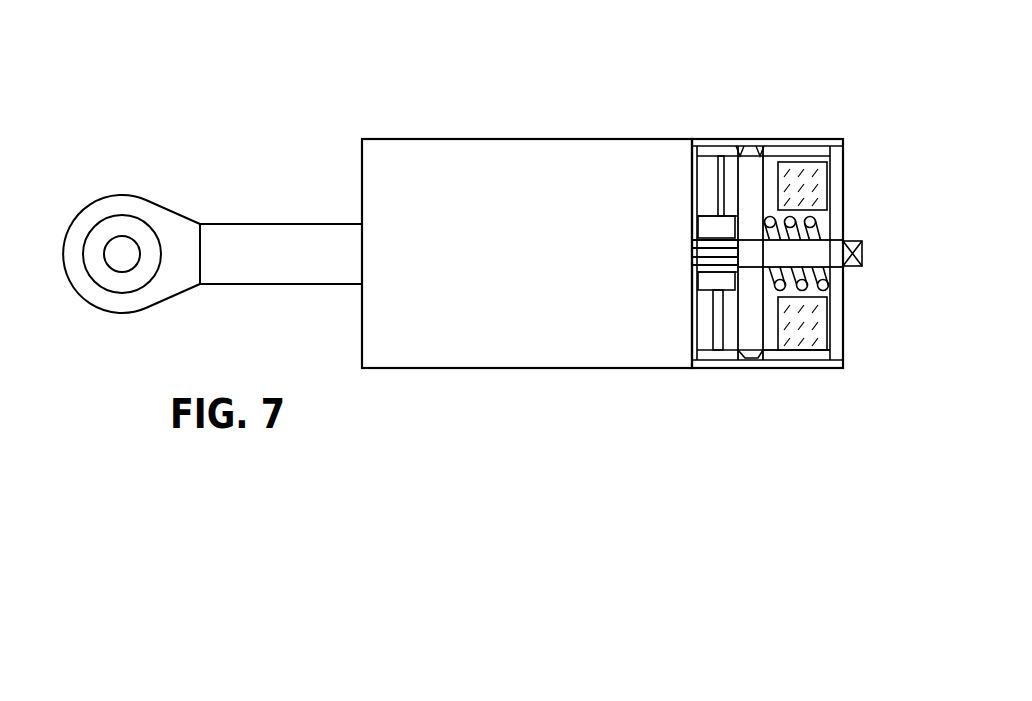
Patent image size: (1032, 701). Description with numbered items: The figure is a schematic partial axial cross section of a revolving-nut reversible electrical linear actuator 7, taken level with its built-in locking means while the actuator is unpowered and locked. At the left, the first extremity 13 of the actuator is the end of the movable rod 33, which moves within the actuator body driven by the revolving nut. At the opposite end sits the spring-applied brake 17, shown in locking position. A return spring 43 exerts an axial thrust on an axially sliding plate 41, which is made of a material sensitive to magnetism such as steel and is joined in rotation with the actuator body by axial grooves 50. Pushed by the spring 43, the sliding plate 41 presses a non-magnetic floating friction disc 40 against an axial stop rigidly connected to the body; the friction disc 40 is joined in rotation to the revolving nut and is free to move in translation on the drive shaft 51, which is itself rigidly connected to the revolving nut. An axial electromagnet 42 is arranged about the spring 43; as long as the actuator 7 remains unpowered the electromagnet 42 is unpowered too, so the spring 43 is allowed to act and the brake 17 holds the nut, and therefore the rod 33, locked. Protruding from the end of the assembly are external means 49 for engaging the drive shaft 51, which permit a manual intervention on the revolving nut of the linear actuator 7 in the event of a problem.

The linear actuator 7 is at (408, 392).
The first extremity 13 is at (91, 305).
The spring-applied brake 17 is at (740, 114).
The movable rod 33 is at (246, 227).
The floating friction disc 40 is at (720, 176).
The axially sliding plate 41 is at (757, 172).
The axial electromagnet 42 is at (815, 180).
The return spring 43 is at (828, 289).
The external means for engaging the drive shaft 49 is at (848, 240).
The axial grooves 50 is at (776, 354).
The drive shaft 51 is at (760, 258).